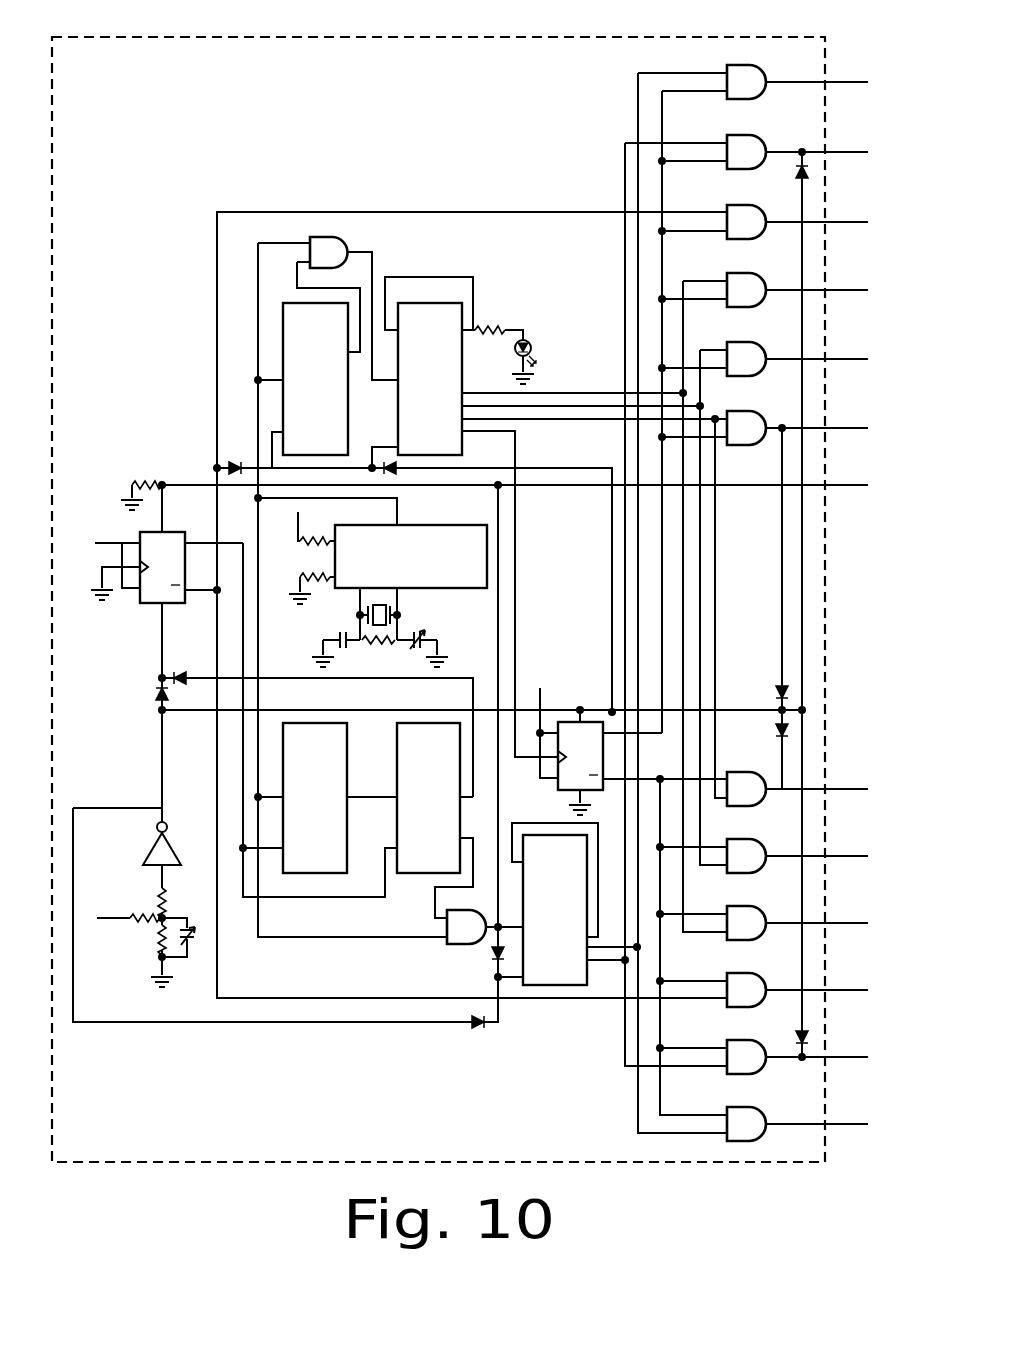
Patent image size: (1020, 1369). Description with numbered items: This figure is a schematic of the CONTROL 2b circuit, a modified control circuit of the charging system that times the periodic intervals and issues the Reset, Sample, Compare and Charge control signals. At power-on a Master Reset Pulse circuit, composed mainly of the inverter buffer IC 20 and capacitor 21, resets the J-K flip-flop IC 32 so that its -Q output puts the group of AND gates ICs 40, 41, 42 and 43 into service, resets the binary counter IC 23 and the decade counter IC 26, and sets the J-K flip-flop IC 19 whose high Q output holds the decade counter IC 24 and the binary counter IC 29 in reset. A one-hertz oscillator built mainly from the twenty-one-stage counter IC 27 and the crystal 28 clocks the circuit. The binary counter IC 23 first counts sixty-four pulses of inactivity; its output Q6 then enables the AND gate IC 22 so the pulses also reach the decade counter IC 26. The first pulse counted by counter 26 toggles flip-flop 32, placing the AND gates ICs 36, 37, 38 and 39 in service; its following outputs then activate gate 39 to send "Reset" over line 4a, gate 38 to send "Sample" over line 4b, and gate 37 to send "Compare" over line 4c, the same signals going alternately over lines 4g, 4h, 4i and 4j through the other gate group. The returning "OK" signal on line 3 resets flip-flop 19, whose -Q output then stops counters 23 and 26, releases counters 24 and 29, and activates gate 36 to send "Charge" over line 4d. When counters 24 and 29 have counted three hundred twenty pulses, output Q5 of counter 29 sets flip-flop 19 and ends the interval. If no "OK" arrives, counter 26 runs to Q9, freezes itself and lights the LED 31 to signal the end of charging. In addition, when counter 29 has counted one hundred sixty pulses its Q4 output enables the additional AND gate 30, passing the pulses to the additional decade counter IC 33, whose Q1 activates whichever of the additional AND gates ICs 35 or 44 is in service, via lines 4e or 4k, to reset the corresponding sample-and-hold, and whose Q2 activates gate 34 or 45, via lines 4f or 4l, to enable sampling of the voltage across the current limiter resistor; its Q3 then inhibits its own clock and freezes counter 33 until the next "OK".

The CONTROL circuit 2b is at (122, 1165).
The line 3 is at (848, 490).
The line 4a is at (846, 426).
The line 4b is at (846, 357).
The line 4c is at (846, 288).
The line 4d is at (846, 220).
The line 4e is at (846, 150).
The line 4f is at (846, 80).
The line 4g is at (846, 787).
The line 4h is at (846, 854).
The line 4i is at (846, 921).
The line 4j is at (846, 988).
The line 4k is at (846, 1055).
The line 4l is at (846, 1122).
The J-K flip-flop IC 19 is at (143, 604).
The inverter buffer IC 20 is at (146, 854).
The capacitor 21 is at (196, 929).
The AND gate IC 22 is at (318, 237).
The binary counter IC 23 is at (283, 327).
The decade counter IC 24 is at (300, 693).
The decade counter IC 26 is at (433, 303).
The 21-stage counter IC 27 is at (487, 548).
The crystal 28 is at (400, 613).
The binary counter IC 29 is at (397, 760).
The AND gate 30 is at (455, 946).
The LED 31 is at (535, 341).
The J-K flip-flop IC 32 is at (592, 722).
The decade counter IC 33 is at (557, 986).
The AND gate IC 34 is at (744, 43).
The AND gate IC 35 is at (744, 113).
The AND gate IC 36 is at (744, 183).
The AND gate IC 37 is at (744, 251).
The AND gate IC 38 is at (744, 320).
The AND gate IC 39 is at (744, 389).
The AND gate IC 40 is at (744, 750).
The AND gate IC 41 is at (744, 817).
The AND gate IC 42 is at (744, 884).
The AND gate IC 43 is at (744, 951).
The AND gate IC 44 is at (744, 1018).
The AND gate IC 45 is at (744, 1085).